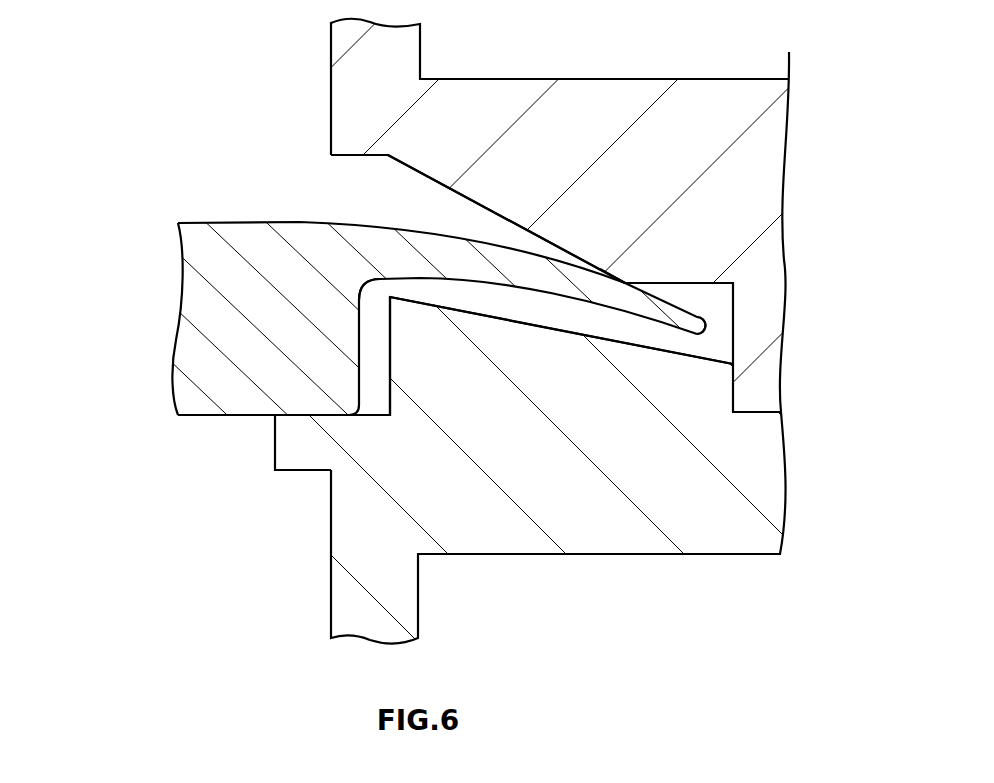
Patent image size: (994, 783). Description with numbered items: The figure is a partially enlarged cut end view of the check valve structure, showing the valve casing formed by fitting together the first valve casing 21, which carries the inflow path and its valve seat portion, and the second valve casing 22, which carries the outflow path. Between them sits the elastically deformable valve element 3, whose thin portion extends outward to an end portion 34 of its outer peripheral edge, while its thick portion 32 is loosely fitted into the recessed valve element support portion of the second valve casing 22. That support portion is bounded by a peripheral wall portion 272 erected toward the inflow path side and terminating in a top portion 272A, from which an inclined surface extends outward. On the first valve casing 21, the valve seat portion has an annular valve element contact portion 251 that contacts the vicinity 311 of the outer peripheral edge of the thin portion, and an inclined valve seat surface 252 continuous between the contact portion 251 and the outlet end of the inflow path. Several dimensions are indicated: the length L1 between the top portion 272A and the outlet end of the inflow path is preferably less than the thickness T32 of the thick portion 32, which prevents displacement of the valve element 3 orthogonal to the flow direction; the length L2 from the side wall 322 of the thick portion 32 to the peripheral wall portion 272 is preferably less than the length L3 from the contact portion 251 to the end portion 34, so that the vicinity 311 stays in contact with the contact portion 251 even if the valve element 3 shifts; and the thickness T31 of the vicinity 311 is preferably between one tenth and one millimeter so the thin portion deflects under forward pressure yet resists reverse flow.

The first valve casing 21 is at (592, 78).
The second valve casing 22 is at (703, 530).
The valve element 3 is at (233, 233).
The vicinity of the outer peripheral edge portion 311 is at (557, 292).
The end portion of the outer peripheral edge 34 is at (703, 328).
The annular valve element contact portion 251 is at (625, 283).
The valve seat surface 252 is at (455, 193).
The peripheral wall portion 272 is at (359, 332).
The top portion of the peripheral wall portion 272A is at (394, 296).
The side wall of the thick portion 322 is at (359, 320).
The thick portion 32 is at (250, 416).
The thickness at the center (thick portion) of the valve element T32 is at (176, 415).
The length between the top portion of the peripheral wall portion and the outlet end L1 is at (385, 297).
The length from the side wall of the thick portion to the peripheral wall portion L2 is at (389, 368).
The length from the valve element contact portion to the end portion of the outer pe L3 is at (703, 320).
The thickness of the vicinity of the outer peripheral edge portion T31 is at (617, 290).